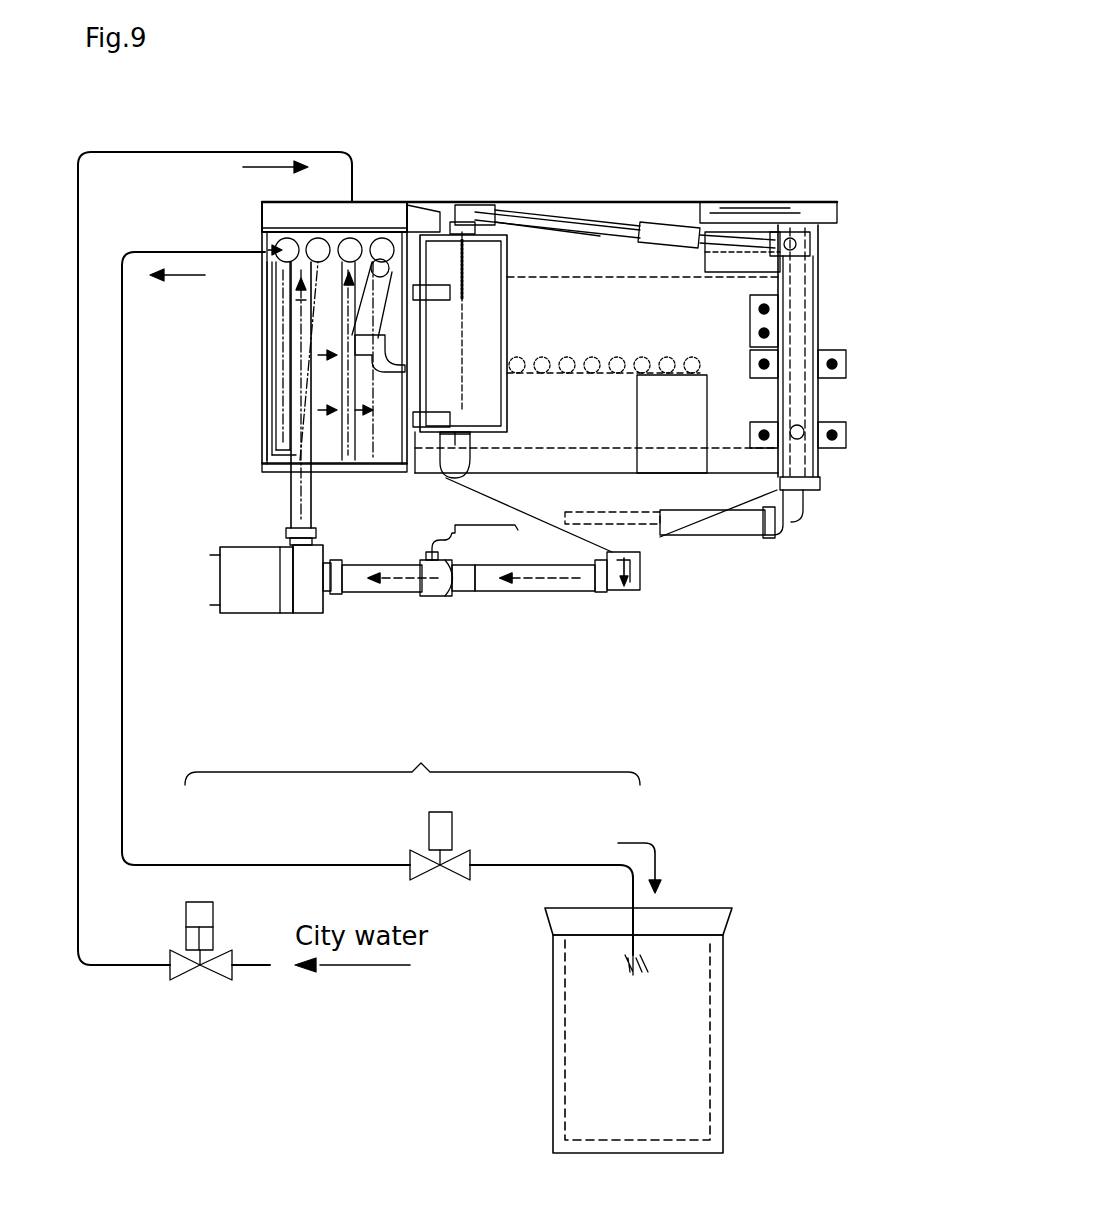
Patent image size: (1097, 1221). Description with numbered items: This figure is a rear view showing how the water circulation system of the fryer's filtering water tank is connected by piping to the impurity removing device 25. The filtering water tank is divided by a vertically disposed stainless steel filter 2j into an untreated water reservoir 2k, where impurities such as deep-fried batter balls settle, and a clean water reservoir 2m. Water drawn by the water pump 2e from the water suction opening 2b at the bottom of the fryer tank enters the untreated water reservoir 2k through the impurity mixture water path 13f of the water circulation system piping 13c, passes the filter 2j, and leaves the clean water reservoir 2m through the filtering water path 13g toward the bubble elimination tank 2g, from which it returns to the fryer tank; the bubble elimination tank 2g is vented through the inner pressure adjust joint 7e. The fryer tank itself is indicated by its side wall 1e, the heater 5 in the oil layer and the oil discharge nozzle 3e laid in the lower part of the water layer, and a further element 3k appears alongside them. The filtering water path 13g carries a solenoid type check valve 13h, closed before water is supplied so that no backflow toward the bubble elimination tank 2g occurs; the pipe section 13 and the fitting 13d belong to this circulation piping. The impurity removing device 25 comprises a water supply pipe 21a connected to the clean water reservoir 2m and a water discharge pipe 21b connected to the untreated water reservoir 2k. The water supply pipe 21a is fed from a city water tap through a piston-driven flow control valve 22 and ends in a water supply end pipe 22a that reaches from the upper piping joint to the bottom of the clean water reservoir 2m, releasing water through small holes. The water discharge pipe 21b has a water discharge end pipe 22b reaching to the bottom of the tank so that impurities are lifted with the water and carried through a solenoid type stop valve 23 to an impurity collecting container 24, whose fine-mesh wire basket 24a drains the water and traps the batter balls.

The water supply pipe 21a is at (190, 152).
The water discharge pipe 21b is at (180, 252).
The filtering water path 13g is at (376, 235).
The bubble elimination tank 2g is at (448, 245).
The inner pressure adjust joint 7e is at (476, 214).
The check valve 13h is at (340, 272).
The water pump 2e is at (248, 613).
The water discharge end pipe 22b is at (283, 365).
The untreated water reservoir 2k is at (280, 430).
The impurity mixture water path 13f is at (540, 592).
The water circulation system piping 13c is at (315, 424).
The filter 2j is at (345, 470).
The clean water reservoir 2m is at (375, 465).
The water supply end pipe 22a is at (427, 539).
The guide rail 3k is at (810, 328).
The heater 5 is at (690, 392).
The side wall 1e is at (797, 436).
The oil discharge nozzle 3e is at (662, 522).
The water suction opening 2b is at (625, 592).
The circulation pipe 13 is at (375, 594).
The check valve 13d is at (445, 596).
The impurity removing device 25 is at (412, 758).
The stop valve 23 is at (452, 828).
The flow control valve 22 is at (213, 920).
The impurity collecting container 24 is at (725, 968).
The wire basket 24a is at (712, 1015).